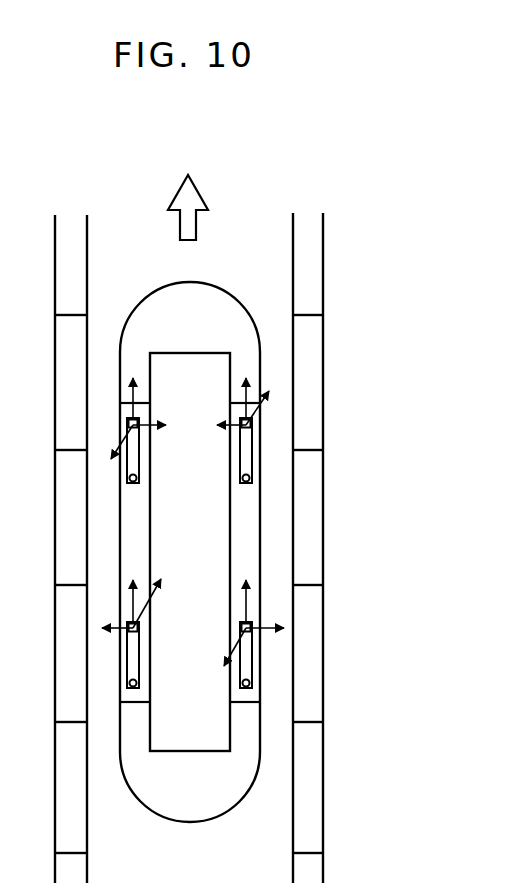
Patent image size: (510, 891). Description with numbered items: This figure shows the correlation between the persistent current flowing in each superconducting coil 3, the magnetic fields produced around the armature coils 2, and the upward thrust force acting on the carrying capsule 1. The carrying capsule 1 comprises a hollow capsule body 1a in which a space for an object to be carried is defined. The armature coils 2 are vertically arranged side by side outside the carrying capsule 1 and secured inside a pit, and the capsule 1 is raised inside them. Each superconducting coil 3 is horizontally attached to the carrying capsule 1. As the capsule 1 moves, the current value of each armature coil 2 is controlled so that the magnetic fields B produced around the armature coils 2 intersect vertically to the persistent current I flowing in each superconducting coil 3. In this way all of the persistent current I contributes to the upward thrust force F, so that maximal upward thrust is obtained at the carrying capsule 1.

The carrying capsule 1 is at (261, 317).
The hollow capsule body 1a is at (168, 363).
The armature coils 2 is at (323, 693).
The superconducting coil 3 is at (248, 478).